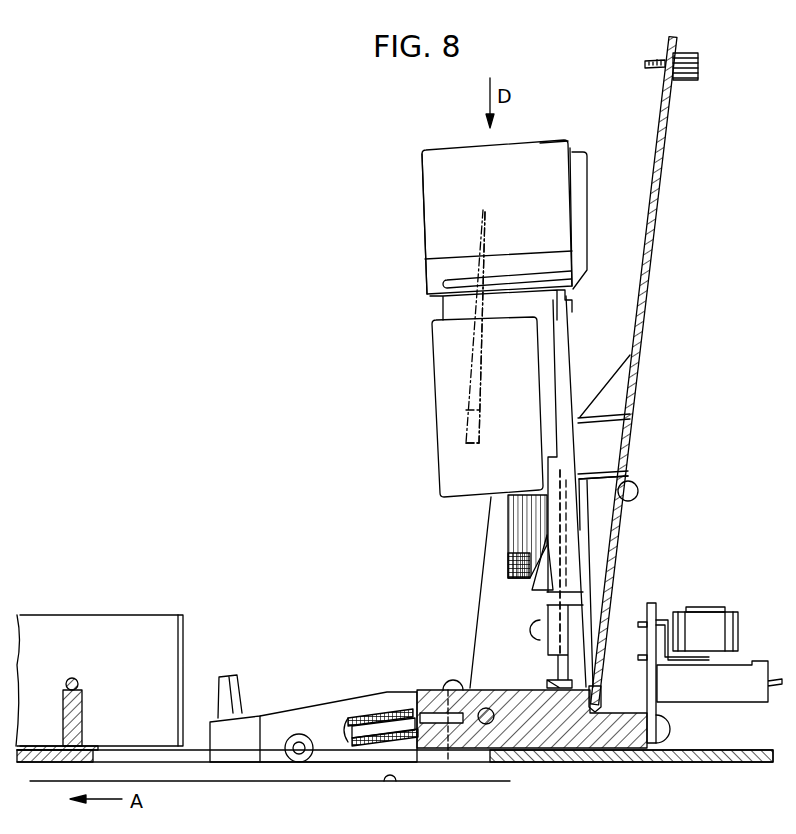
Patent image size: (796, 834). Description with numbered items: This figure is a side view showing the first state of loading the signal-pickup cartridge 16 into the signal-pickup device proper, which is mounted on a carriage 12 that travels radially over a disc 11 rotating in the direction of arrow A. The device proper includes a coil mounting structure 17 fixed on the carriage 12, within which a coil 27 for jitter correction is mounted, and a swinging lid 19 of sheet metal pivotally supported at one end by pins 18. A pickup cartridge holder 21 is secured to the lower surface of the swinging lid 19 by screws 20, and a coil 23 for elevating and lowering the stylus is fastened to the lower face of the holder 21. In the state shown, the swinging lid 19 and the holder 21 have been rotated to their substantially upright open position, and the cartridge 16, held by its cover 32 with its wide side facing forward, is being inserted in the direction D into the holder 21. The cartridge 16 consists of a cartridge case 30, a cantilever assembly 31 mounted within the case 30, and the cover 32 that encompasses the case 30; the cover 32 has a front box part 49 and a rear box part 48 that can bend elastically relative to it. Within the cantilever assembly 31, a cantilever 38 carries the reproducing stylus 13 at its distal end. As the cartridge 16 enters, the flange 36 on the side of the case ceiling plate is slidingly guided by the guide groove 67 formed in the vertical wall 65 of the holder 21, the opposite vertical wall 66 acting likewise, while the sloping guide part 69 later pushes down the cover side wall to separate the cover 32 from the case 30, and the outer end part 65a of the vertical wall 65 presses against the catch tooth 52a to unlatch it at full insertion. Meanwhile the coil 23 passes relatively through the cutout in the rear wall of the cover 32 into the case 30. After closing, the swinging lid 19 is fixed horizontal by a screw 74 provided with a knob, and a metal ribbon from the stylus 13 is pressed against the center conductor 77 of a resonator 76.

The disc 11 is at (270, 794).
The carriage 12 is at (618, 763).
The reproducing stylus 13 is at (480, 211).
The signal-pickup cartridge 16 is at (435, 137).
The coil mounting structure 17 is at (540, 750).
The pins 18 is at (488, 705).
The swinging lid 19 is at (647, 279).
The screws 20 is at (640, 493).
The pickup cartridge holder 21 is at (600, 546).
The coil for elevating and lowering the stylus 23 is at (506, 527).
The coil for jitter correction 27 is at (391, 716).
The cartridge case 30 is at (594, 214).
The cantilever assembly 31 is at (460, 360).
The cover 32 is at (418, 212).
The flange 36 is at (570, 371).
The cantilever 38 is at (484, 356).
The rear box part 48 is at (440, 397).
The front box part 49 is at (549, 146).
The catch tooth 52a is at (571, 298).
The vertical wall 65 is at (578, 570).
The outer end part of vertical wall 65a is at (573, 427).
The vertical wall 66 is at (556, 508).
The guide groove 67 is at (574, 525).
The sloping guide part 69 is at (530, 586).
The screw provided with a knob 74 is at (684, 83).
The resonator 76 is at (115, 622).
The center conductor 77 is at (78, 681).